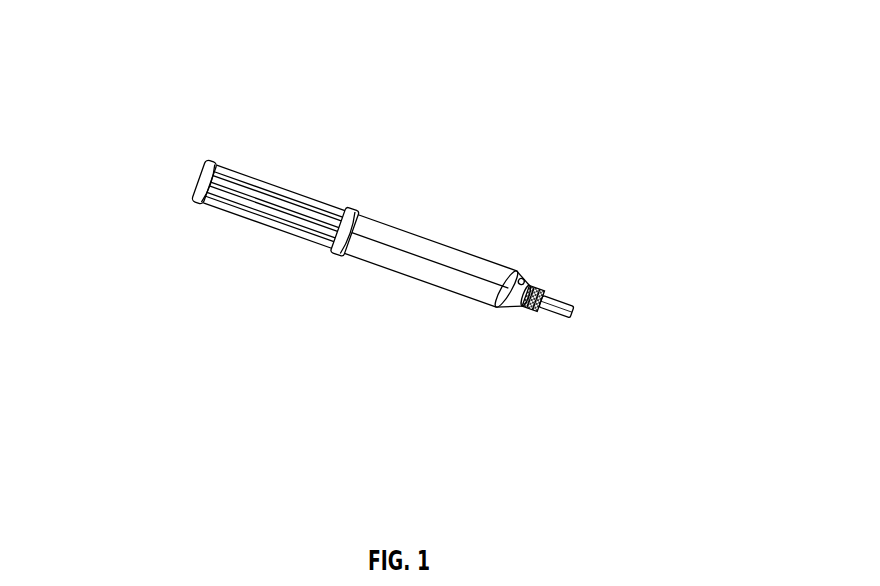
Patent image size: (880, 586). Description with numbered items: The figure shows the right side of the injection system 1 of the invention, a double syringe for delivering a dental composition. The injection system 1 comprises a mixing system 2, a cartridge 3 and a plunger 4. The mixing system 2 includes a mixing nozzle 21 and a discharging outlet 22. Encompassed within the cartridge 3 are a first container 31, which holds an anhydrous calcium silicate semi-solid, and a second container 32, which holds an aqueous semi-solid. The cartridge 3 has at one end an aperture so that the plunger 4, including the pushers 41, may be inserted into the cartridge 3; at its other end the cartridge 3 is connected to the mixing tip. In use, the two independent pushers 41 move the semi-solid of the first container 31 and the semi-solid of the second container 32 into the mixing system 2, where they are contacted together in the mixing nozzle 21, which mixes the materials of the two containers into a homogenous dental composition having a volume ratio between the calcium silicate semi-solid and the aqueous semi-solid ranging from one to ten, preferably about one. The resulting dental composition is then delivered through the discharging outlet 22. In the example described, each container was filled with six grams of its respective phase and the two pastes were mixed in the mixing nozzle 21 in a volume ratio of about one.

The cleaning pen / applicator device 1 is at (248, 278).
The mixing system 2 is at (582, 397).
The cartridge 3 is at (490, 397).
The plunger 4 is at (330, 397).
The mixing nozzle 21 is at (547, 297).
The discharging outlet 22 is at (563, 312).
The first container 31 is at (420, 237).
The second container 32 is at (523, 280).
The pushers 41 is at (253, 185).